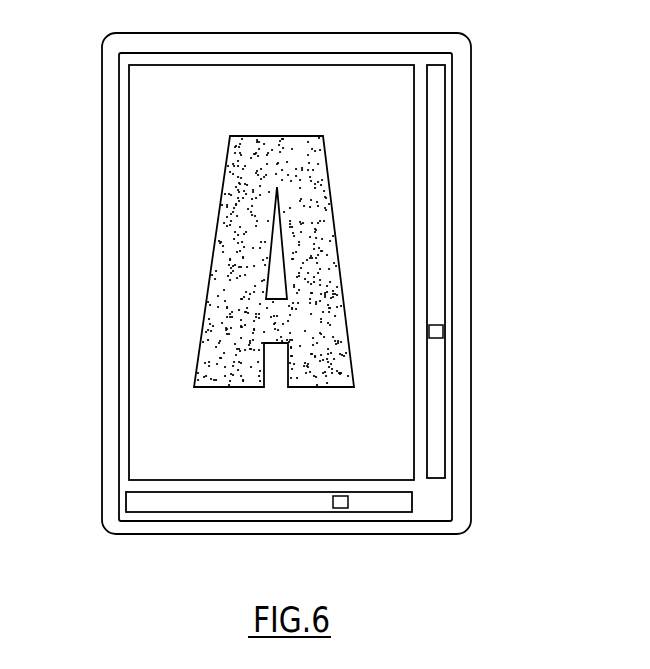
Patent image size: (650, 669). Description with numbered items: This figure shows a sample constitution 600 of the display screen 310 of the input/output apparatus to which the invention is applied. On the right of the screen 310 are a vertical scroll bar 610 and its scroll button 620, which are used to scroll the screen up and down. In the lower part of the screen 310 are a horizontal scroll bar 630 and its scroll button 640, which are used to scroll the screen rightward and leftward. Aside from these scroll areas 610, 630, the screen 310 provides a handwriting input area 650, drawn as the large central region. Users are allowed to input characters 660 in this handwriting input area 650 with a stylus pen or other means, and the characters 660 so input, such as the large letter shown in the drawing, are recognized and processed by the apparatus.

The user interface screen 600 is at (528, 556).
The screen 310 is at (320, 53).
The handwriting input area 650 is at (126, 240).
The scroll bar 610 is at (438, 165).
The scroll button 620 is at (443, 330).
The scroll bar 630 is at (240, 508).
The scroll button 640 is at (340, 508).
The characters 660 is at (258, 136).